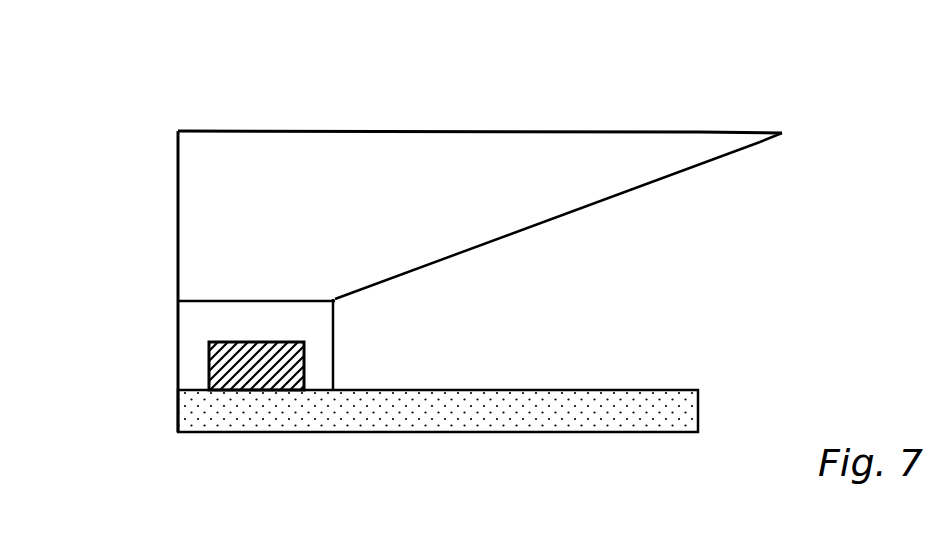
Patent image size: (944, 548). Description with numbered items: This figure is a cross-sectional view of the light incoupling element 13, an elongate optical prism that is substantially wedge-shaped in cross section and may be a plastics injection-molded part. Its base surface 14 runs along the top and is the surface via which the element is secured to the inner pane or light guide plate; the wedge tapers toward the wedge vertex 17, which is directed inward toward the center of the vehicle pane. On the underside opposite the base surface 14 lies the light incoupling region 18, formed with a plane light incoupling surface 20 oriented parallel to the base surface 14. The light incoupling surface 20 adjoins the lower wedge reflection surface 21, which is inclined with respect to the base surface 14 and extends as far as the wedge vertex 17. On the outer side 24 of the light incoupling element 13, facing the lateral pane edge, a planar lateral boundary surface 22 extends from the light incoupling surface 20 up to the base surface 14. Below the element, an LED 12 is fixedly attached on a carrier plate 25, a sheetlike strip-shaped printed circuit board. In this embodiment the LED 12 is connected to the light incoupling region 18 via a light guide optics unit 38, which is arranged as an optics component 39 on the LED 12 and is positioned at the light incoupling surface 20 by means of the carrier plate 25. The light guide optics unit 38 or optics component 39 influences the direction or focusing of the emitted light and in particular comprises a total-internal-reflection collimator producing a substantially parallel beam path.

The LED 12 is at (238, 367).
The light incoupling element 13 is at (479, 175).
The base surface 14 is at (400, 120).
The wedge vertex 17 is at (779, 150).
The light incoupling region 18 is at (278, 298).
The light incoupling surface 20 is at (311, 315).
The lower wedge reflection surface 21 is at (624, 194).
The lateral boundary surface 22 is at (178, 193).
The outer side 24 is at (135, 212).
The carrier plate 25 is at (535, 412).
The light guide optics unit 38 is at (160, 353).
The optics component 39 is at (197, 325).